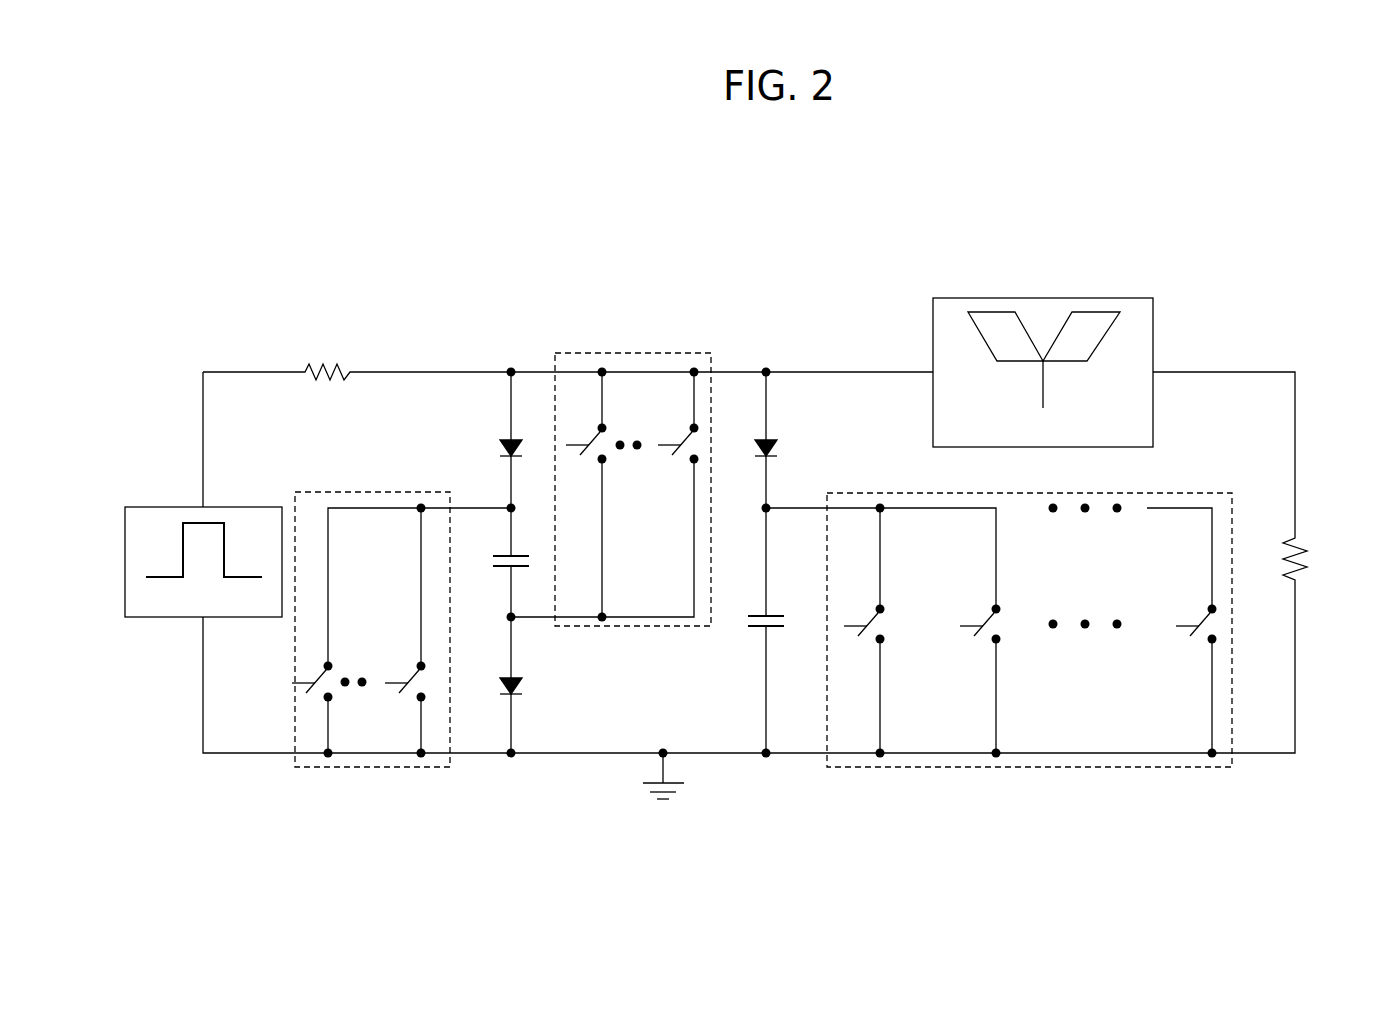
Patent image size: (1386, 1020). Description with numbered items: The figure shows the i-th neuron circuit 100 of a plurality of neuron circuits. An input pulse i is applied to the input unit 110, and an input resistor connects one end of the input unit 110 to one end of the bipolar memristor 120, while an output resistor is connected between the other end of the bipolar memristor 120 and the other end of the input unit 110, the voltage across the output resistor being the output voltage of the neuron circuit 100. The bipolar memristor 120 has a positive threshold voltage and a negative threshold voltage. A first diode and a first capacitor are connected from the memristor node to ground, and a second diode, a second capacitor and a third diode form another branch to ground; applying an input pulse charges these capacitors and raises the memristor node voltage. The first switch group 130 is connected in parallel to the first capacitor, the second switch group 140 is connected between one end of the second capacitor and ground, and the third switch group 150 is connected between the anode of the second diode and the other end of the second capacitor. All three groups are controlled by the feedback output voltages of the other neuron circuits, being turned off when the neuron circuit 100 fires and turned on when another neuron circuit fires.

The neuron circuit 100 is at (780, 278).
The input unit 110 is at (170, 507).
The bipolar memristor 120 is at (1043, 298).
The first switch group 130 is at (1190, 493).
The second switch group 140 is at (373, 492).
The third switch group 150 is at (632, 352).